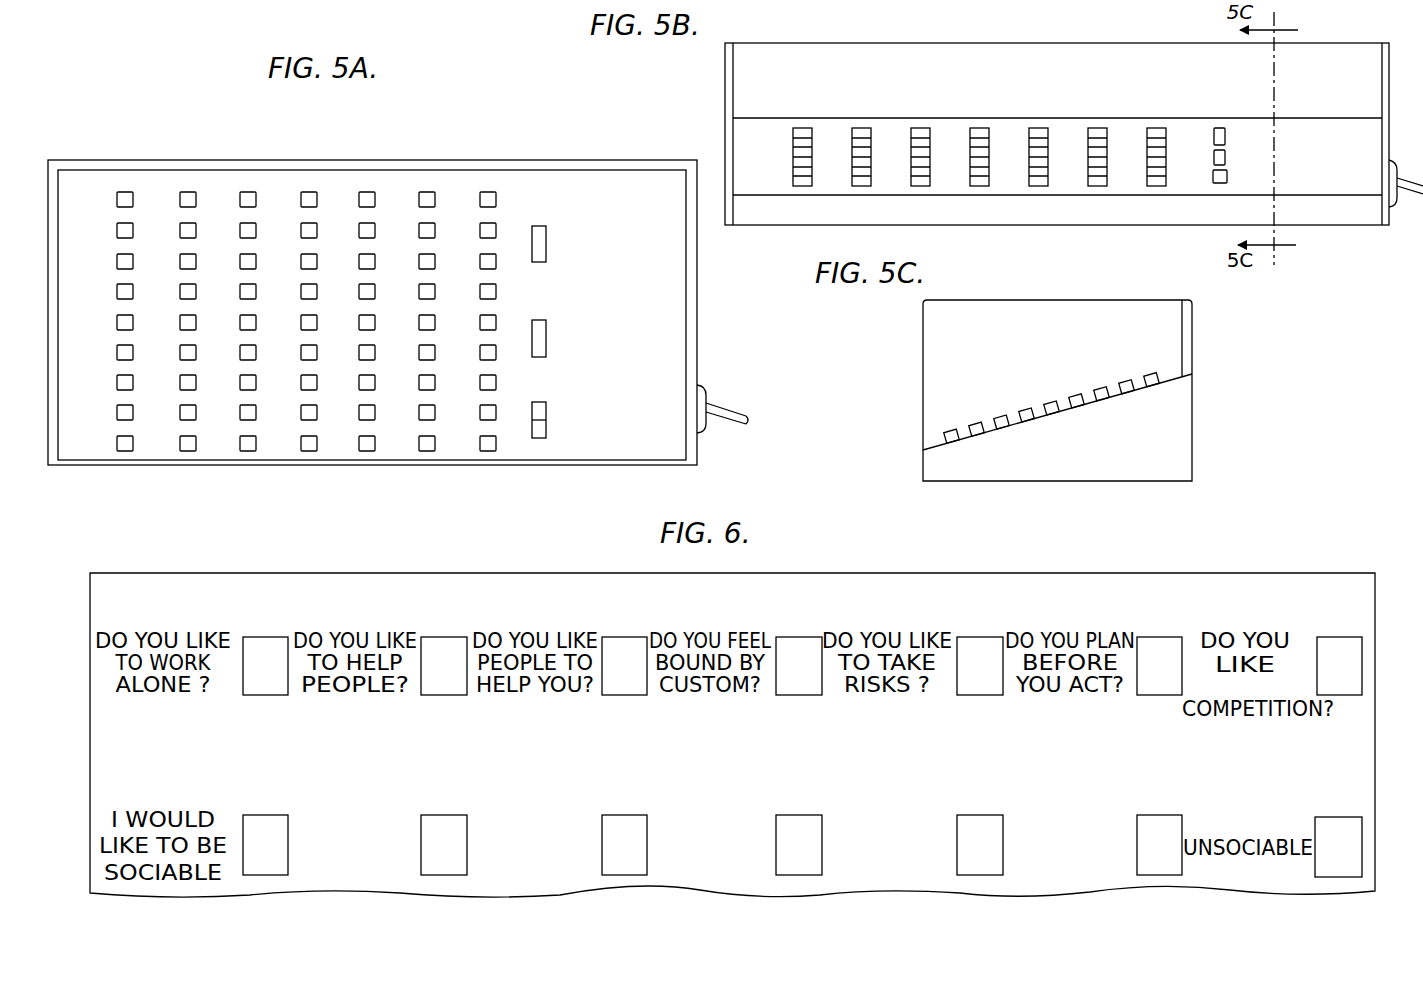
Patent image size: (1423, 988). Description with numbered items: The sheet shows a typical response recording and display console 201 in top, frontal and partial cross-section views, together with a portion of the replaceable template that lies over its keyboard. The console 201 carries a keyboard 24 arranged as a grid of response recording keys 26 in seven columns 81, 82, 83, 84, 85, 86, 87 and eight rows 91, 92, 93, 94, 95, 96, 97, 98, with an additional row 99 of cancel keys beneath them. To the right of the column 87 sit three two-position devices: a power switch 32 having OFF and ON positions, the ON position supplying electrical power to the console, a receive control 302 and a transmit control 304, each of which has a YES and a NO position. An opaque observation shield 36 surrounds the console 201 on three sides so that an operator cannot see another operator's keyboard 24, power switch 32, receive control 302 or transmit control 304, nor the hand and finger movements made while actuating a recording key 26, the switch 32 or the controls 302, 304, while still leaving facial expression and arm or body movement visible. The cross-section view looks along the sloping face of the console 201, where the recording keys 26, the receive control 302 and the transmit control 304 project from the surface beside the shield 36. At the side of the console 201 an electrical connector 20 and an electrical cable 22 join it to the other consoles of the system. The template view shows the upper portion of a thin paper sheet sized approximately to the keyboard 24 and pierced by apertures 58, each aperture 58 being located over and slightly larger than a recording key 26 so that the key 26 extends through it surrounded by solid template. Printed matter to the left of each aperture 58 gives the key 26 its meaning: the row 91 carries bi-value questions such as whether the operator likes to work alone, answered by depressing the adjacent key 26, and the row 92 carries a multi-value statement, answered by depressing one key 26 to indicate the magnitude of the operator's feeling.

In FIG. 5A, the electrical connector 20 is at (706, 392).
In FIG. 5B, the electrical connector 20 is at (1396, 165).
In FIG. 5A, the electrical cable 22 is at (729, 405).
In FIG. 5B, the electrical cable 22 is at (1420, 195).
In FIG. 5B, the keyboard 24 is at (955, 114).
In FIG. 5C, the keyboard 24 is at (1055, 372).
In FIG. 5C, the response recording key 26 is at (1152, 373).
In FIG. 5A, the power switch 32 is at (548, 423).
In FIG. 5B, the power switch 32 is at (1213, 182).
In FIG. 5A, the observation shield 36 is at (613, 160).
In FIG. 5B, the observation shield 36 is at (1392, 61).
In FIG. 5C, the observation shield 36 is at (1193, 303).
In FIG. 6, the aperture 58 is at (288, 695).
In FIG. 5A, the column 81 is at (128, 187).
In FIG. 6, the column 81 is at (261, 631).
In FIG. 5A, the column 82 is at (191, 187).
In FIG. 6, the column 82 is at (438, 631).
In FIG. 5A, the column 83 is at (251, 187).
In FIG. 6, the column 83 is at (619, 631).
In FIG. 5A, the column 84 is at (312, 187).
In FIG. 6, the column 84 is at (793, 631).
In FIG. 5A, the column 85 is at (370, 187).
In FIG. 6, the column 85 is at (973, 631).
In FIG. 5A, the column 86 is at (430, 187).
In FIG. 6, the column 86 is at (1153, 631).
In FIG. 5A, the column 87 is at (491, 187).
In FIG. 6, the column 87 is at (1340, 634).
In FIG. 5A, the row 91 is at (116, 199).
In FIG. 6, the row 91 is at (86, 666).
In FIG. 5A, the row 92 is at (116, 230).
In FIG. 6, the row 92 is at (86, 843).
In FIG. 5A, the row 93 is at (116, 261).
In FIG. 5A, the row 94 is at (116, 291).
In FIG. 5A, the row 95 is at (116, 322).
In FIG. 5A, the row 96 is at (116, 352).
In FIG. 5A, the row 97 is at (116, 382).
In FIG. 5A, the row 98 is at (116, 412).
In FIG. 5A, the row of cancel keys 99 is at (116, 443).
In FIG. 5B, the response recording and display console 201 is at (976, 212).
In FIG. 5C, the response recording and display console 201 is at (912, 444).
In FIG. 5A, the receive control 302 is at (548, 338).
In FIG. 5B, the receive control 302 is at (1227, 158).
In FIG. 5C, the receive control 302 is at (1028, 415).
In FIG. 5A, the transmit control 304 is at (548, 245).
In FIG. 5B, the transmit control 304 is at (1227, 138).
In FIG. 5C, the transmit control 304 is at (1103, 392).